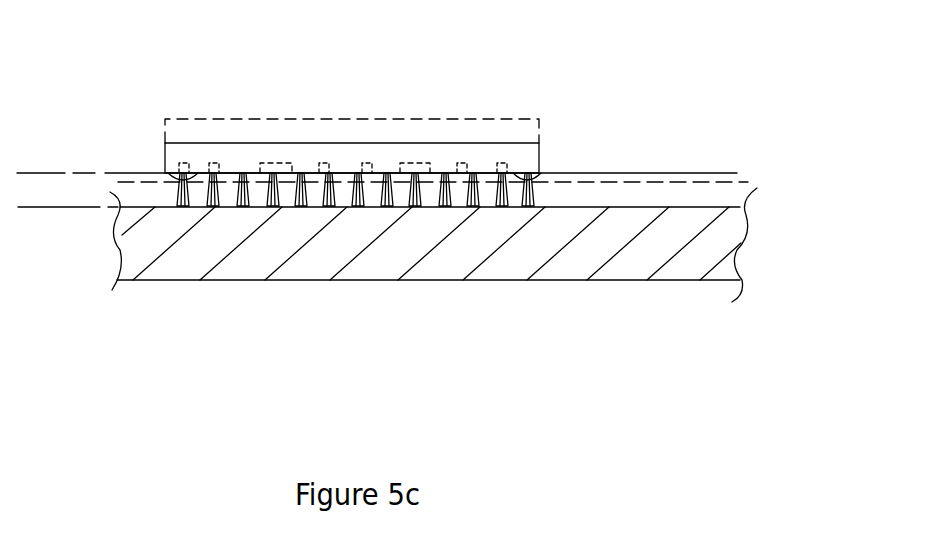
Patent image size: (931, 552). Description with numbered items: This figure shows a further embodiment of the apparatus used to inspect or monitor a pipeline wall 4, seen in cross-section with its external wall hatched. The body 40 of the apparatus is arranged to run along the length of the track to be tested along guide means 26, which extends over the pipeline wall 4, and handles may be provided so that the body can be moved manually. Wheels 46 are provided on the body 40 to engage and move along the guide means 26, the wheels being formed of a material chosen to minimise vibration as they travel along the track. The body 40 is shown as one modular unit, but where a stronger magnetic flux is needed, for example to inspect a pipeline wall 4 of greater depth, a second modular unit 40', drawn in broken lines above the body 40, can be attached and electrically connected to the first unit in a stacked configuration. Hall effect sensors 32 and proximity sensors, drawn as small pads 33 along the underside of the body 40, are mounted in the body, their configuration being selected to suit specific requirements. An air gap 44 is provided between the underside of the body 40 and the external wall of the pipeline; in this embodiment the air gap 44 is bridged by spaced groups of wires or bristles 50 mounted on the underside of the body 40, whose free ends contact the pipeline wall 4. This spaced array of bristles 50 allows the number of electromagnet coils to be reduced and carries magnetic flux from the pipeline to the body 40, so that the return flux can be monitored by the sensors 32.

The pipeline wall 4 is at (228, 266).
The guide means 26 is at (617, 173).
The hall effect sensors 32 is at (274, 162).
The contact pad 33 is at (183, 163).
The body 40 is at (362, 106).
The second modular unit 40' is at (409, 83).
The air gap 44 is at (40, 174).
The wheels 46 is at (170, 176).
The groups of wires or bristles 50 is at (505, 206).